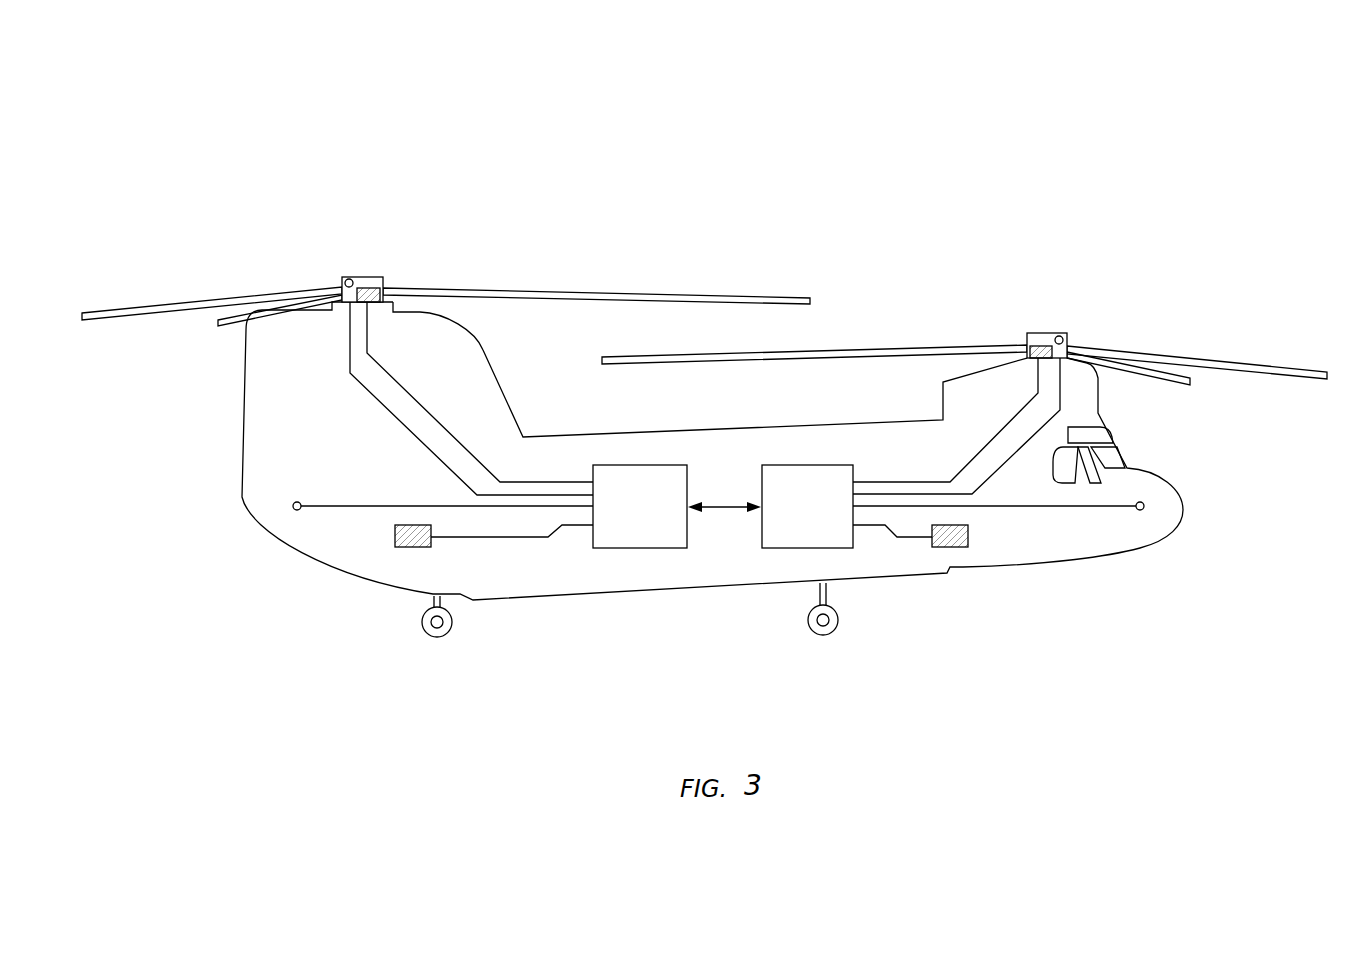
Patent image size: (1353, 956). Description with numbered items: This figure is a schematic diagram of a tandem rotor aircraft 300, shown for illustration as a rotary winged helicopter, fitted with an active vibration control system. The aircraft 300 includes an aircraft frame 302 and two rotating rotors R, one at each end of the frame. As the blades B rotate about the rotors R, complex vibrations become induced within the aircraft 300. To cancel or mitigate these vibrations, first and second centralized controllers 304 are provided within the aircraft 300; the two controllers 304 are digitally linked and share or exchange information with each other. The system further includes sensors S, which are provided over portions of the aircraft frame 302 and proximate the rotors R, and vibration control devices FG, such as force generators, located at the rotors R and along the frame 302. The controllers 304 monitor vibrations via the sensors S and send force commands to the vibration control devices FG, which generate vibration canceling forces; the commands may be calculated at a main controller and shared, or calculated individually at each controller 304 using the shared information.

The tandem rotor aircraft 300 is at (472, 154).
The aircraft frame 302 is at (245, 425).
The centralized controller 304 is at (608, 502).
The rotor R is at (376, 250).
The blade B is at (562, 290).
The sensor S is at (347, 279).
The vibration control device FG is at (383, 285).